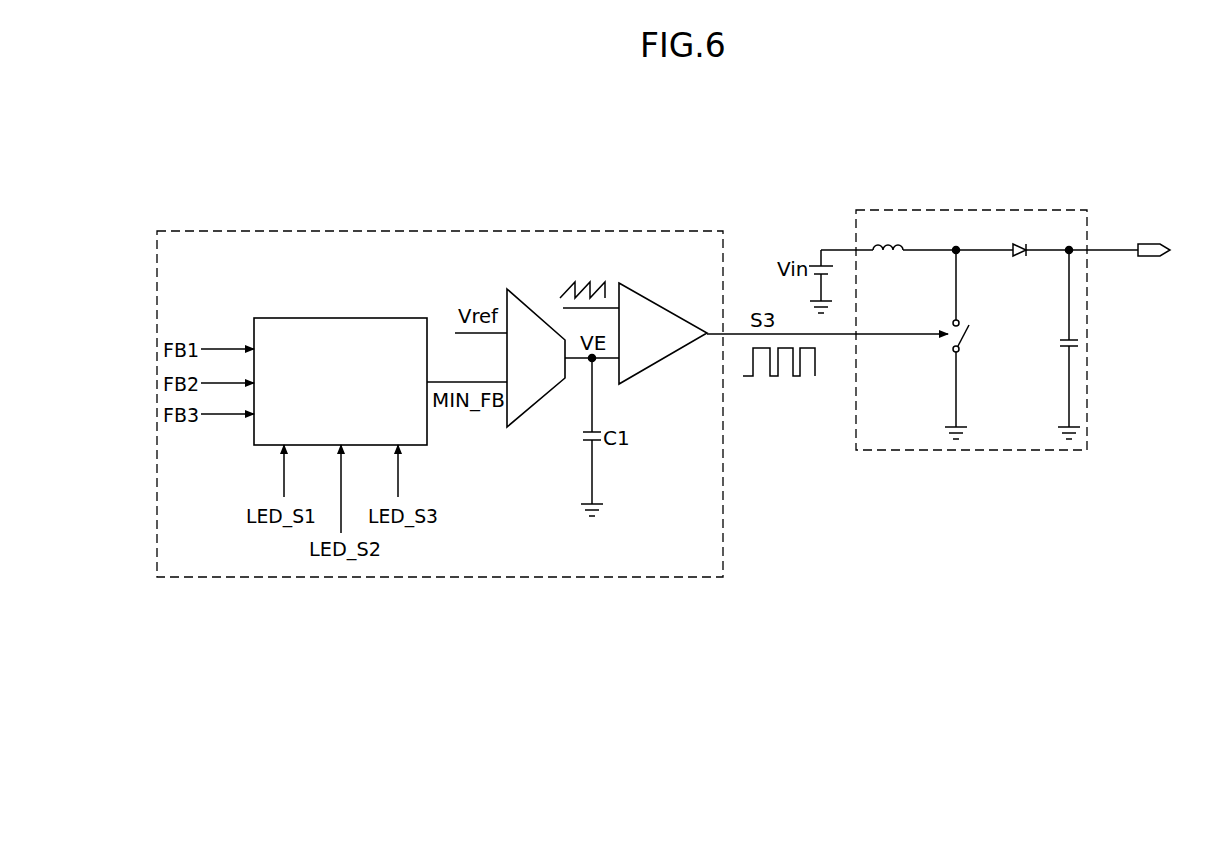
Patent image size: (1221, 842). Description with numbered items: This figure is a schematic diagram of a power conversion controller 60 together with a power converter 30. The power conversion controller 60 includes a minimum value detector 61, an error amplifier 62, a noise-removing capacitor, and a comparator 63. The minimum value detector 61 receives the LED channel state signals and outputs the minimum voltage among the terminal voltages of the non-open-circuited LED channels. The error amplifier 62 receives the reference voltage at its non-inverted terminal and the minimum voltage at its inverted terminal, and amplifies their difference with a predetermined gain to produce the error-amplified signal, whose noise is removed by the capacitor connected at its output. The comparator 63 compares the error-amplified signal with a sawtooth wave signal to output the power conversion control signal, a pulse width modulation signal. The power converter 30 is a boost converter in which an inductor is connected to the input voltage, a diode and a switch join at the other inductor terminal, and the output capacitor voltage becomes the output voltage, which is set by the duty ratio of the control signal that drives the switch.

The power conversion controller 60 is at (439, 231).
The minimum value detector 61 is at (340, 318).
The error amplifier 62 is at (515, 292).
The comparator 63 is at (670, 304).
The power converter 30 is at (970, 210).